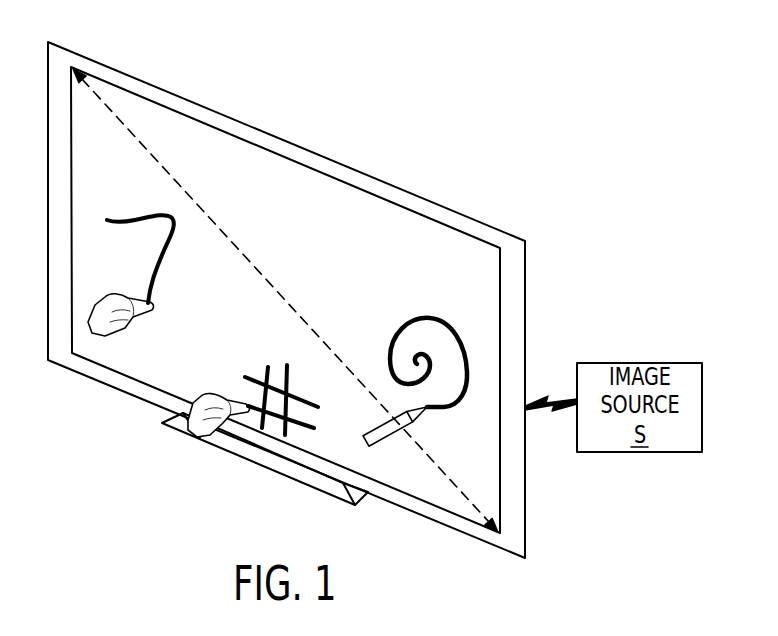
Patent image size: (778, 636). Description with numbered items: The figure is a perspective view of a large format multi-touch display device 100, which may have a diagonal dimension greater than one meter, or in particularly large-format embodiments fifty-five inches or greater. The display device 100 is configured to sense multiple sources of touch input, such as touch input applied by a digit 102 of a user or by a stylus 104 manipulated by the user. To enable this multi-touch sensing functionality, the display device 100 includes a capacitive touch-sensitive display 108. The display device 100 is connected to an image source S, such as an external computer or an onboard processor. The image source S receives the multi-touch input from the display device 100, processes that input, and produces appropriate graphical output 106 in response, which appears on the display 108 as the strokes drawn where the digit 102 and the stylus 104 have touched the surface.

The large format multi-touch display device 100 is at (286, 300).
The digit 102 is at (169, 365).
The stylus 104 is at (395, 439).
The graphical output 106 is at (280, 302).
The capacitive touch-sensitive display 108 is at (285, 300).